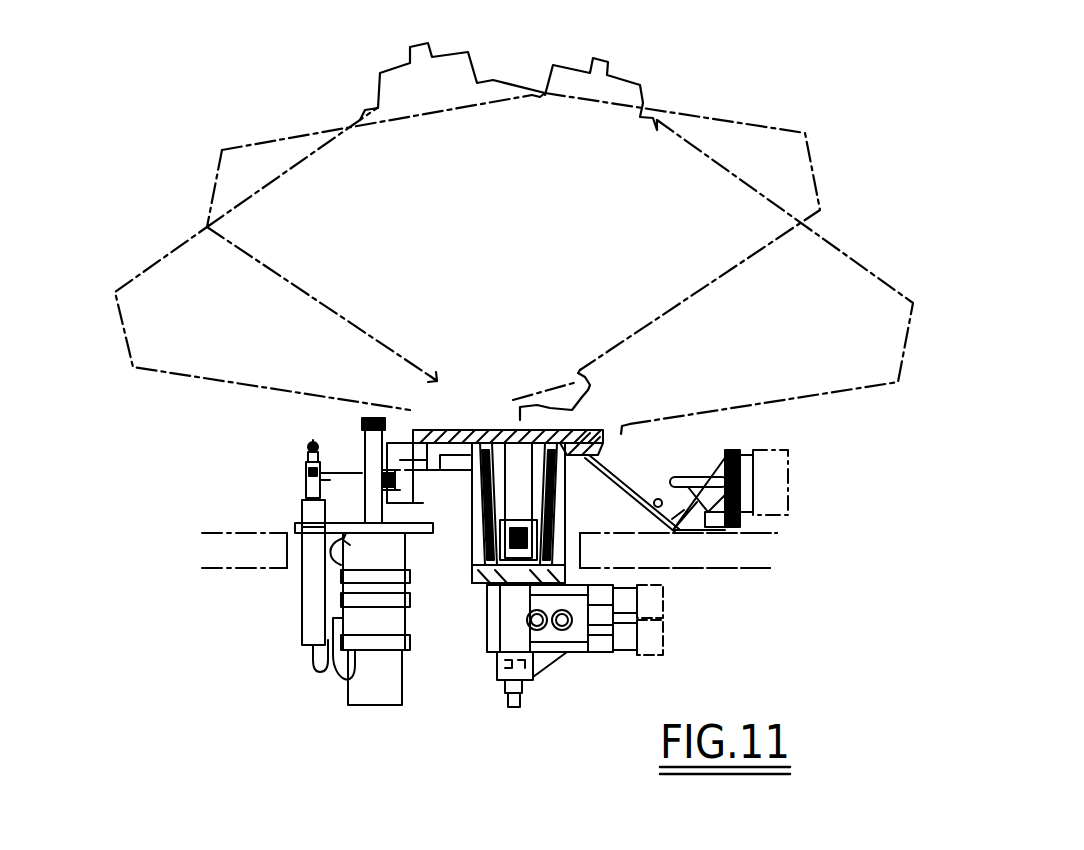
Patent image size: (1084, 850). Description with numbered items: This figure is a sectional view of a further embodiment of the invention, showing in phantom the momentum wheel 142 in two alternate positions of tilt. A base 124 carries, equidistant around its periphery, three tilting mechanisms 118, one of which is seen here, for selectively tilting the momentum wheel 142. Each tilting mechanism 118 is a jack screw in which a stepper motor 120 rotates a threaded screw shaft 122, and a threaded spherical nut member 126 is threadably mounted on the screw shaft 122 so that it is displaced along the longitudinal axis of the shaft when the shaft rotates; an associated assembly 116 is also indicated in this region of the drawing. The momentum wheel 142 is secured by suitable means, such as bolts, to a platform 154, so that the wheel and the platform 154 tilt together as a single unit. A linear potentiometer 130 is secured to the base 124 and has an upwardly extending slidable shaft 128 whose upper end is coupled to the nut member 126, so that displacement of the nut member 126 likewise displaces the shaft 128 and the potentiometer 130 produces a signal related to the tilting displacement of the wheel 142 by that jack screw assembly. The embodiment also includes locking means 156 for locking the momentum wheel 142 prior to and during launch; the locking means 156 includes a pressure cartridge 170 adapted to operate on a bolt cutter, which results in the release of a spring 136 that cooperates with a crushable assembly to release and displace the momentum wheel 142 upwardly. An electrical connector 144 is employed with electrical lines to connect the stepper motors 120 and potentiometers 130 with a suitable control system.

The momentum wheel 142 is at (700, 115).
The platform 154 is at (570, 420).
The spring 136 is at (580, 555).
The threaded screw shaft 122 is at (362, 424).
The slidable shaft 128 is at (308, 465).
The threaded spherical nut member 126 is at (343, 502).
The locking assembly 116 is at (267, 498).
The base 124 is at (298, 527).
The linear potentiometer 130 is at (307, 588).
The tilting mechanism 118 is at (288, 625).
The stepper motor 120 is at (357, 700).
The electrical connector 144 is at (732, 495).
The locking means 156 is at (573, 673).
The pressure cartridge 170 is at (600, 653).